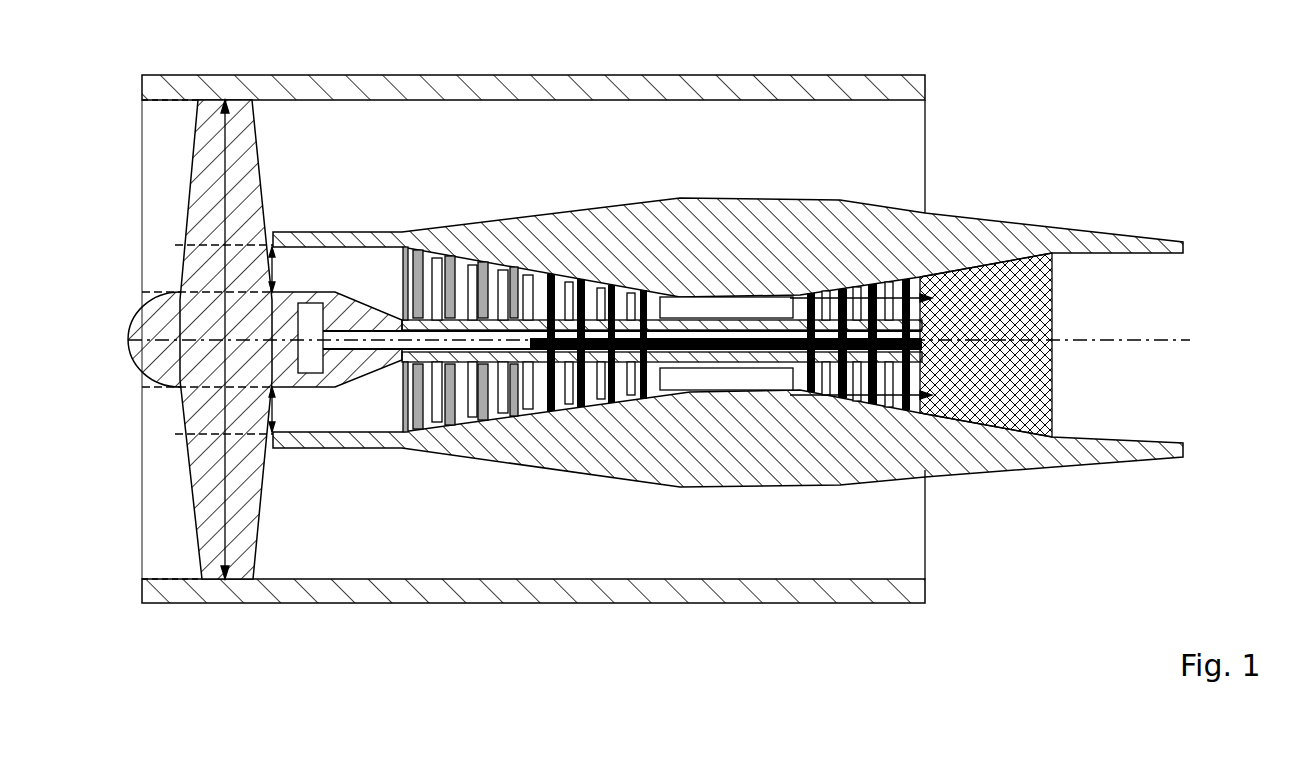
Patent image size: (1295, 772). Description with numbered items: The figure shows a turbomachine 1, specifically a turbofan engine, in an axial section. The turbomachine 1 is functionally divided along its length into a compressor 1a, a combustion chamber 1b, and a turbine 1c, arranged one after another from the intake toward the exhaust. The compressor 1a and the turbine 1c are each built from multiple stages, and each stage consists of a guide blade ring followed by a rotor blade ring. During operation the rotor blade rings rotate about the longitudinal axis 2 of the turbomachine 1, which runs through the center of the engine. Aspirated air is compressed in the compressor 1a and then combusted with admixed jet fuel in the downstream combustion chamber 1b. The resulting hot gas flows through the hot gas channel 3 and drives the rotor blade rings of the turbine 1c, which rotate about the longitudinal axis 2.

The turbomachine 1 is at (655, 380).
The compressor 1a is at (385, 645).
The combustion chamber 1b is at (652, 645).
The turbine 1c is at (921, 404).
The longitudinal axis 2 is at (1133, 345).
The hot gas channel 3 is at (858, 382).